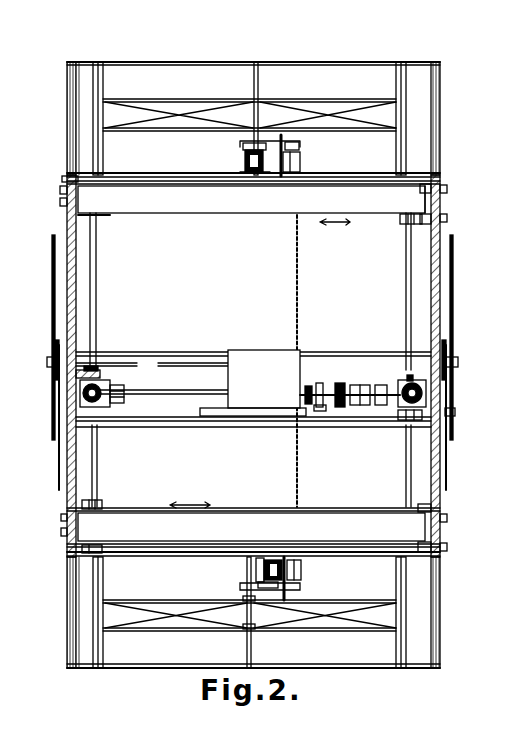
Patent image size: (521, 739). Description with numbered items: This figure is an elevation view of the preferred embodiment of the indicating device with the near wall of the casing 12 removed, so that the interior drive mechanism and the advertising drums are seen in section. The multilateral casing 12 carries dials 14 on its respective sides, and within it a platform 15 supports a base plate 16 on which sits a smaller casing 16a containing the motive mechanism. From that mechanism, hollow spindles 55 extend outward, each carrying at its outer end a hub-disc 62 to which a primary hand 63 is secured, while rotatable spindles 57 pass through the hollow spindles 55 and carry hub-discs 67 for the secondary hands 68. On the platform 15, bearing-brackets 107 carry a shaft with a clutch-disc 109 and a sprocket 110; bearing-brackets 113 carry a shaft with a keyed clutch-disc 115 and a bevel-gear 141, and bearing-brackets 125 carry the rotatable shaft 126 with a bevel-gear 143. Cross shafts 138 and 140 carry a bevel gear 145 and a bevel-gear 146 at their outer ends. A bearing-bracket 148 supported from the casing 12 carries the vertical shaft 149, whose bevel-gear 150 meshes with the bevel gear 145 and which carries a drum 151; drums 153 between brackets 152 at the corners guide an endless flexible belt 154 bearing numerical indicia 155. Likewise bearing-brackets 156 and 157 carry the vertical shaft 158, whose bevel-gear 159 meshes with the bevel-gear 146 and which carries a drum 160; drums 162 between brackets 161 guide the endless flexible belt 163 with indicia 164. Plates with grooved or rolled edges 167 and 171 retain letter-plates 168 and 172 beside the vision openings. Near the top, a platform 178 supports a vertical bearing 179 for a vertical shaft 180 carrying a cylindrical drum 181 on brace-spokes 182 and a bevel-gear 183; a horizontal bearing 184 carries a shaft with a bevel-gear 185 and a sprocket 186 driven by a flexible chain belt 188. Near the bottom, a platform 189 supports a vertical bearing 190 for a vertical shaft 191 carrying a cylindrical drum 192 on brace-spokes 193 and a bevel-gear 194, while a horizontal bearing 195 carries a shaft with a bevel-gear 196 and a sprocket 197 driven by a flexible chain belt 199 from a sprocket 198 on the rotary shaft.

The casing 12 is at (66, 229).
The dials 14 is at (456, 411).
The platform 15 is at (191, 422).
The base plate 16 is at (264, 417).
The casing 16a is at (235, 350).
The hollow spindles 55 is at (204, 352).
The rotatable spindles 57 is at (170, 363).
The hub-disc 62 is at (72, 343).
The primary hands 63 is at (58, 450).
The hub-disc 67 is at (55, 358).
The secondary hands 68 is at (51, 258).
The bearing-brackets 107 is at (318, 411).
The clutch-disc 109 is at (340, 383).
The sprocket 110 is at (319, 383).
The bearing-brackets 113 is at (356, 406).
The clutch-disc 115 is at (338, 408).
The bearing-brackets 125 is at (120, 408).
The rotatable shaft 126 is at (182, 386).
The rotatable shaft 138 is at (410, 375).
The rotatable shaft 140 is at (80, 400).
The bevel-gear 141 is at (397, 385).
The bevel-gear 143 is at (125, 405).
The bevel gear 145 is at (455, 398).
The bevel-gear 146 is at (92, 406).
The bearing-bracket 148 is at (447, 547).
The vertical shaft 149 is at (408, 490).
The bevel-gear 150 is at (402, 421).
The drum 151 is at (432, 510).
The brackets 152 is at (104, 503).
The drums 153 is at (67, 508).
The endless flexible belt 154 is at (228, 521).
The numerical indicia 155 is at (386, 513).
The bearing-bracket 156 is at (100, 370).
The bearing-bracket 157 is at (62, 178).
The vertical shaft 158 is at (93, 303).
The bevel-gear 159 is at (76, 376).
The drum 160 is at (106, 216).
The brackets 161 is at (432, 188).
The drums 162 is at (400, 216).
The endless flexible belt 163 is at (256, 214).
The numerical indicia 164 is at (228, 213).
The grooved or rolled edges 167 is at (60, 190).
The letter-plates 168 is at (60, 203).
The grooved or rolled edges 171 is at (61, 518).
The letter-plates 172 is at (61, 532).
The platform 178 is at (240, 172).
The vertical bearing 179 is at (243, 147).
The vertical shaft 180 is at (258, 118).
The cylindrical drum 181 is at (440, 128).
The brace-spokes 182 is at (165, 99).
The bevel-gear 183 is at (300, 140).
The horizontal bearing 184 is at (300, 168).
The bevel-gear 185 is at (295, 155).
The sprocket 186 is at (300, 156).
The flexible chain belt 188 is at (299, 284).
The platform 189 is at (215, 566).
The vertical bearing 190 is at (256, 578).
The vertical shaft 191 is at (247, 607).
The cylindrical drum 192 is at (440, 614).
The brace-spokes 193 is at (172, 632).
The bevel-gear 194 is at (240, 590).
The horizontal bearing 195 is at (286, 560).
The bevel-gear 196 is at (275, 591).
The sprocket 197 is at (301, 578).
The sprocket 198 is at (305, 392).
The flexible chain belt 199 is at (298, 458).